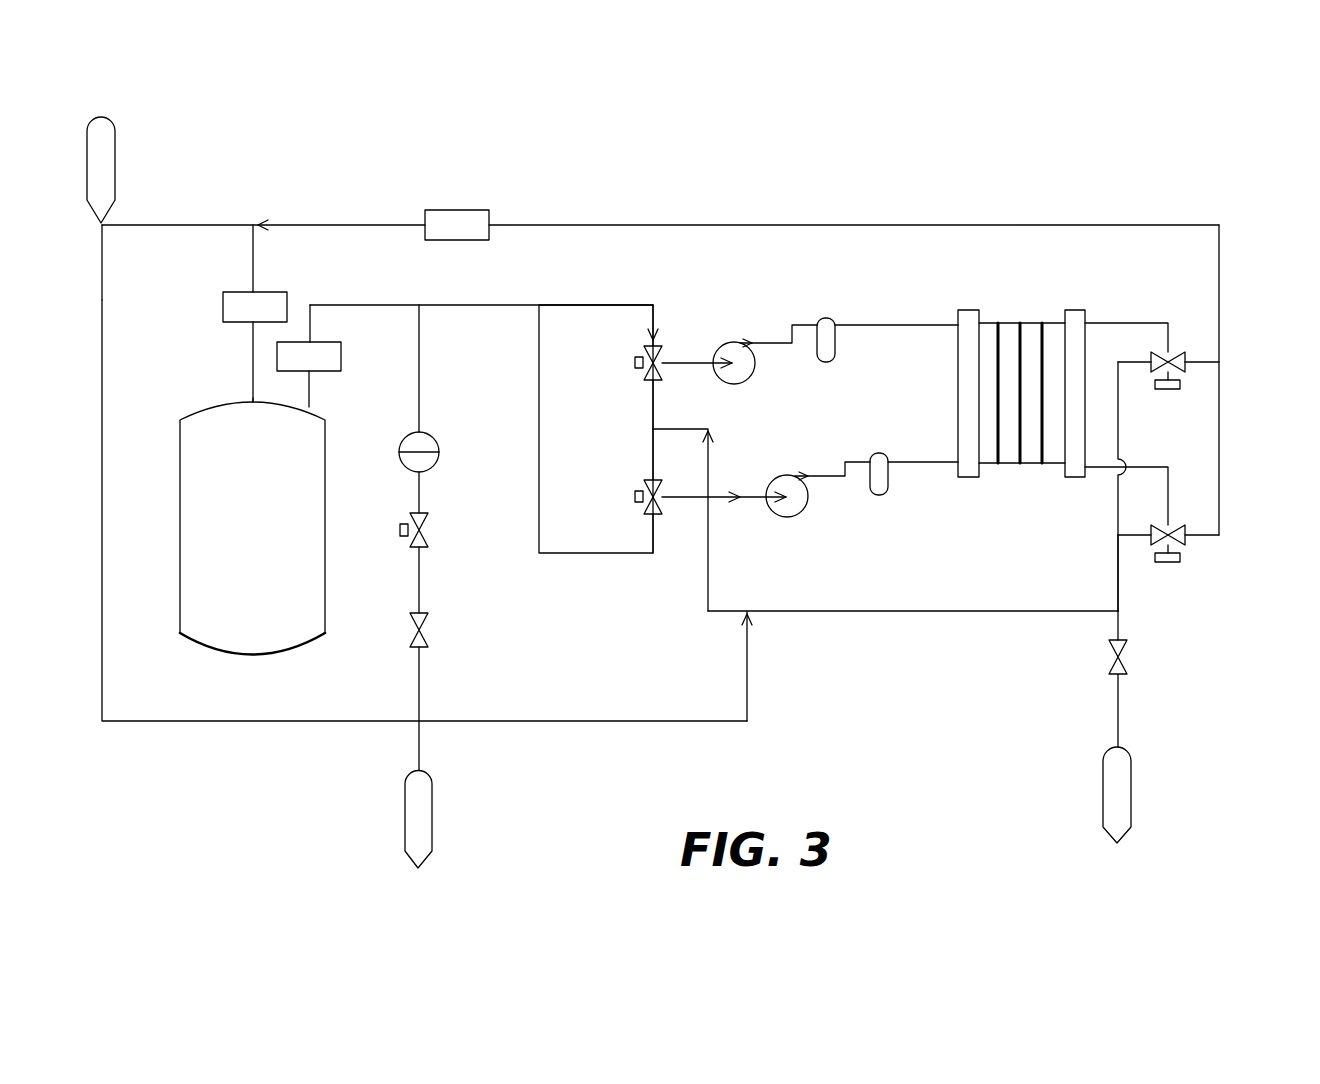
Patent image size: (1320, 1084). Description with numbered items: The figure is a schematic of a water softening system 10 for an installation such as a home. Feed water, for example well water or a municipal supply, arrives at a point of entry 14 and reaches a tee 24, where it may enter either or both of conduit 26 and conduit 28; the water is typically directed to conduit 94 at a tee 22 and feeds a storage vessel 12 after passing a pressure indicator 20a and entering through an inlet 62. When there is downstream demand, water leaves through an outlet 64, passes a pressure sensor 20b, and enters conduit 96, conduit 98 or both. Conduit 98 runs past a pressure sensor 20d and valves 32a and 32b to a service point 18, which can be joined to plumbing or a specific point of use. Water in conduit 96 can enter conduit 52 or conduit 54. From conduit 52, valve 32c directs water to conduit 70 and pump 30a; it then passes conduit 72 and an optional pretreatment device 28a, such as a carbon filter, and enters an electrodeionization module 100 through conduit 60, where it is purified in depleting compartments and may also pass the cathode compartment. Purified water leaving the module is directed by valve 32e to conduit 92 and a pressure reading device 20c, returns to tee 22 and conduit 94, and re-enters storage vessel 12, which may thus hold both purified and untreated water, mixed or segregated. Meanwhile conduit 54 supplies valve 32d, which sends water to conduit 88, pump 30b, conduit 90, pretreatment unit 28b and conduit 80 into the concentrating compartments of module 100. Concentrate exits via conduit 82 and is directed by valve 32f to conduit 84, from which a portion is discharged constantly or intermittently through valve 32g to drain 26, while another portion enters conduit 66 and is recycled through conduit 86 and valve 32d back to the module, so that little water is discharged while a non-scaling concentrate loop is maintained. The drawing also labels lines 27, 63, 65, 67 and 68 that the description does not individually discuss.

The water softening system 10 is at (431, 133).
The storage vessel 12 is at (181, 556).
The point of entry 14 is at (115, 140).
The service point 18 is at (406, 810).
The pressure indicator 20a is at (223, 308).
The pressure sensor 20b is at (330, 341).
The pressure reading device 20c is at (470, 240).
The pressure sensor 20d is at (437, 445).
The tee 22 is at (258, 224).
The tee 24 is at (104, 230).
The drain 26 is at (1131, 760).
The vent line 27 is at (148, 224).
The conduit 28 is at (104, 418).
The pretreatment device 28a is at (833, 352).
The pretreatment unit 28b is at (884, 495).
The pump 30a is at (746, 381).
The pump 30b is at (798, 516).
The valve 32a is at (425, 546).
The valve 32b is at (425, 646).
The valve 32c is at (648, 372).
The valve 32d is at (648, 506).
The valve 32e is at (1185, 356).
The valve 32f is at (1185, 530).
The valve 32g is at (1122, 645).
The conduit 52 is at (632, 305).
The conduit 54 is at (538, 485).
The conduit 60 is at (850, 324).
The inlet 62 is at (250, 400).
The line 63 is at (1130, 322).
The outlet 64 is at (311, 410).
The line 65 is at (1120, 400).
The conduit 66 is at (975, 610).
The line 67 is at (1118, 596).
The line 68 is at (655, 421).
The conduit 70 is at (668, 358).
The conduit 72 is at (756, 348).
The conduit 80 is at (905, 464).
The conduit 82 is at (1170, 475).
The conduit 84 is at (1122, 540).
The conduit 86 is at (652, 455).
The conduit 88 is at (740, 486).
The conduit 90 is at (848, 460).
The conduit 92 is at (1222, 275).
The conduit 94 is at (255, 266).
The conduit 96 is at (536, 305).
The conduit 98 is at (421, 370).
The electrodeionization module 100 is at (1000, 316).